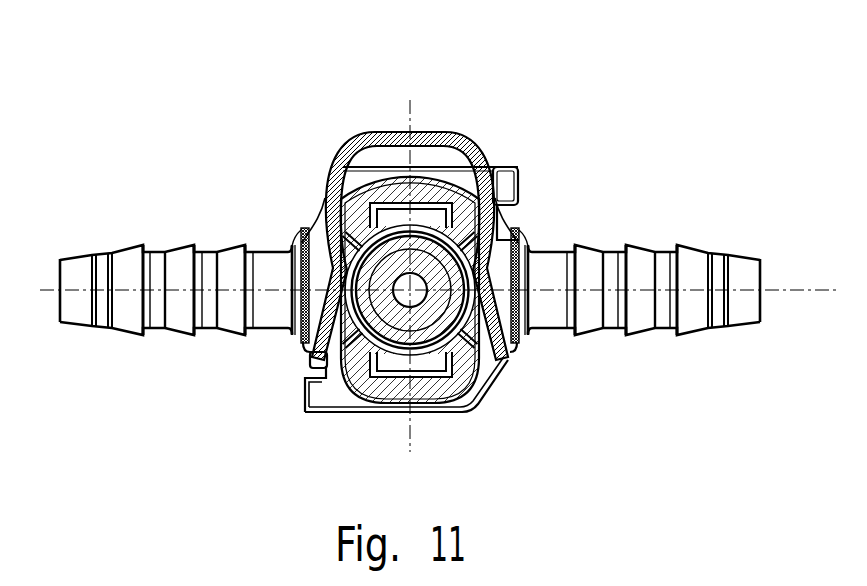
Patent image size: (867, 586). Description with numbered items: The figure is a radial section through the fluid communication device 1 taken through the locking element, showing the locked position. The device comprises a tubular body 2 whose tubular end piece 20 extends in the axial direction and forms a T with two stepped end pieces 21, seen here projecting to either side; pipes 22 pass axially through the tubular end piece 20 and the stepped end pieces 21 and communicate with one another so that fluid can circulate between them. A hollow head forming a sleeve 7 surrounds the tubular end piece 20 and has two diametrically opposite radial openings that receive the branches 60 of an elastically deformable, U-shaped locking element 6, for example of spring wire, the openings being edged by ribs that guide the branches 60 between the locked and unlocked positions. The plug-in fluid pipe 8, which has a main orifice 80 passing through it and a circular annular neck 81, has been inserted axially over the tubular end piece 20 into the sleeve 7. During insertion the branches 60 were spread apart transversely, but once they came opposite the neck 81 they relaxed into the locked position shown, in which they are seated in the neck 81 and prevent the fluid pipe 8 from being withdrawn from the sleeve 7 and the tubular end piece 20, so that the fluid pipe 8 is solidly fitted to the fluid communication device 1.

The fluid communication device 1 is at (189, 131).
The tubular body 2 is at (607, 212).
The stepped end pieces 21 is at (188, 251).
The locking element 6 is at (357, 143).
The branches 60 is at (330, 213).
The pipes 22 is at (413, 283).
The main orifice 80 is at (477, 185).
The fluid pipe 8 is at (310, 338).
The tubular end piece 20 is at (395, 308).
The annular neck 81 is at (397, 352).
The sleeve 7 is at (438, 390).